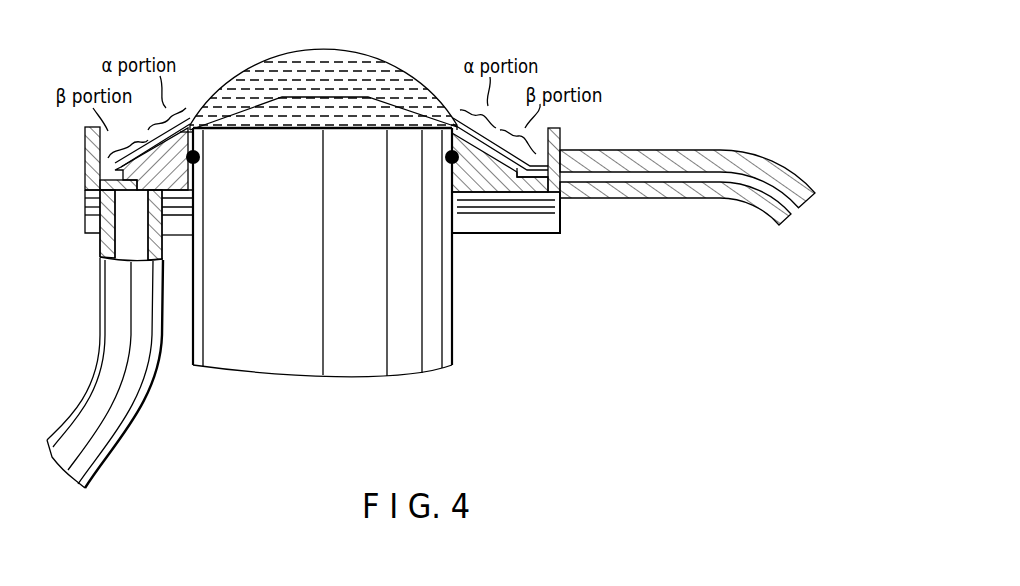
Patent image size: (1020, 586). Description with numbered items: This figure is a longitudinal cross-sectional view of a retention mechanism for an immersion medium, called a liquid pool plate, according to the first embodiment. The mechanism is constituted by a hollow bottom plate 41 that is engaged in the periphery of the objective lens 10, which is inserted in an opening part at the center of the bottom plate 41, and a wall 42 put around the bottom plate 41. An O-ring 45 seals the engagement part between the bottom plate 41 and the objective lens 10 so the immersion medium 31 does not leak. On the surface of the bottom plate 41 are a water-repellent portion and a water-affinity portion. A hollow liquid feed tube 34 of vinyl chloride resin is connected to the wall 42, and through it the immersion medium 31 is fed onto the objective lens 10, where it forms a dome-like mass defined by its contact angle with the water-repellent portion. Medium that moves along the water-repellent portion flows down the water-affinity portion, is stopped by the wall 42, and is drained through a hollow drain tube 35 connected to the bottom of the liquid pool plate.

The objective lens 10 is at (406, 367).
The immersion medium 31 is at (428, 75).
The liquid feed tube 34 is at (606, 201).
The drain tube 35 is at (133, 420).
The bottom plate 41 is at (495, 184).
The wall 42 is at (86, 151).
The O-ring 45 is at (446, 158).